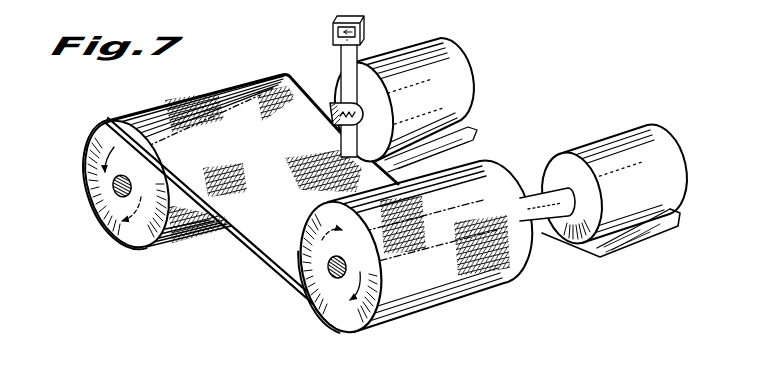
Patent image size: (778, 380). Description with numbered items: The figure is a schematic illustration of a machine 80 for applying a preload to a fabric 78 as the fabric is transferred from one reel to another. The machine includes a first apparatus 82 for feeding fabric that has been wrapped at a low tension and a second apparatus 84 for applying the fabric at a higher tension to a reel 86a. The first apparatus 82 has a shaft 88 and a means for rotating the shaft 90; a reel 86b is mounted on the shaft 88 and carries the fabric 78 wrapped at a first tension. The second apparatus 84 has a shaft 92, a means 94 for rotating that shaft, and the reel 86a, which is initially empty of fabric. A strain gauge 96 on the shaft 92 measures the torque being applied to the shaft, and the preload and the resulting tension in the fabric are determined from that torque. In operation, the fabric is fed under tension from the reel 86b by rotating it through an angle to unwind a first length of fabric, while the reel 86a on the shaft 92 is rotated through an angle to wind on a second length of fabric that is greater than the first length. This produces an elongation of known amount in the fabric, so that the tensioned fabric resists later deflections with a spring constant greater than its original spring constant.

The fabric 78 is at (252, 239).
The machine 80 is at (292, 214).
The first apparatus 82 is at (599, 174).
The second apparatus 84 is at (365, 92).
The reel 86a is at (113, 190).
The reel 86b is at (332, 282).
The shaft 88 is at (537, 206).
The means for rotating the shaft 90 is at (650, 188).
The shaft 92 is at (334, 108).
The means for rotating the shaft 94 is at (444, 106).
The strain gauge 96 is at (362, 28).